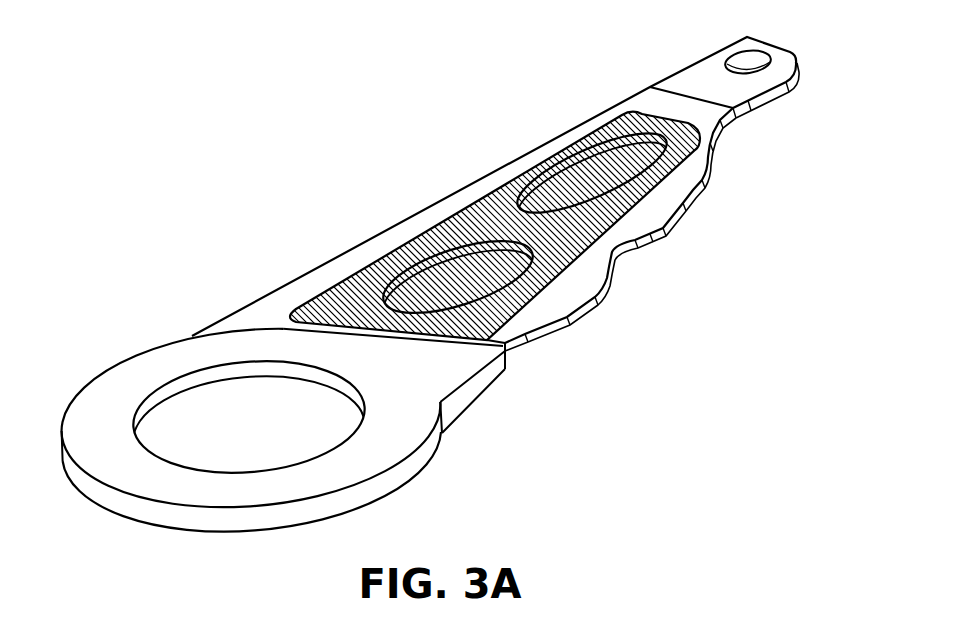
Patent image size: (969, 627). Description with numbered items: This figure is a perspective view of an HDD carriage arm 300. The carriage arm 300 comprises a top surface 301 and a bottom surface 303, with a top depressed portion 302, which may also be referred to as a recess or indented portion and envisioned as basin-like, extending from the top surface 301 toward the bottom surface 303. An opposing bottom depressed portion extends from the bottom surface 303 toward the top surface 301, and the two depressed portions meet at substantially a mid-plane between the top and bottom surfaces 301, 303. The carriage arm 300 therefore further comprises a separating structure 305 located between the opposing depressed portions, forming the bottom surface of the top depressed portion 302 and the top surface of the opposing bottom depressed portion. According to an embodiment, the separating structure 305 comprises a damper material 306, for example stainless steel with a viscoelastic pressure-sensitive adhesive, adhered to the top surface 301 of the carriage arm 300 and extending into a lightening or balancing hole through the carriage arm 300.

The carriage arm 300 is at (143, 135).
The top surface 301 is at (260, 316).
The top depressed portion 302 is at (576, 194).
The bottom surface 303 is at (706, 206).
The separating structure 305 is at (623, 200).
The damper material 306 is at (368, 273).